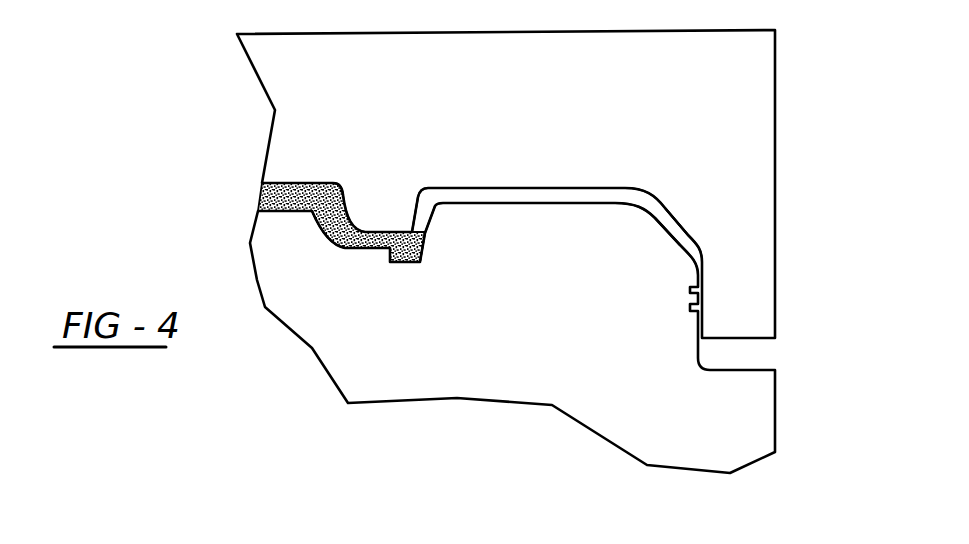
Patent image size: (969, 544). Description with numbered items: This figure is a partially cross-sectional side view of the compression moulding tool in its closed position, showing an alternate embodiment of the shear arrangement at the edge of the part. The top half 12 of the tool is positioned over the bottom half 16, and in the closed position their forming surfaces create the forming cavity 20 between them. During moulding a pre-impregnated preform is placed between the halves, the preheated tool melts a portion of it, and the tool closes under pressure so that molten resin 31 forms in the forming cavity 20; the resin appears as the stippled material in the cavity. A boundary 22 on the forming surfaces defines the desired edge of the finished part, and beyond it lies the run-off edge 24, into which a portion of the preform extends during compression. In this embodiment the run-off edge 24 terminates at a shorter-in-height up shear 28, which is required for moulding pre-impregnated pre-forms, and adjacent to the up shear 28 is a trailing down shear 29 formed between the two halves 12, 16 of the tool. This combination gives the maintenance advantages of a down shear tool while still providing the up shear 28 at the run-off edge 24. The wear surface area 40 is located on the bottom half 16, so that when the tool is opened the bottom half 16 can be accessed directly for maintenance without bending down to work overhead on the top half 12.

The top half 12 is at (535, 112).
The bottom half 16 is at (526, 363).
The forming cavity 20 is at (298, 185).
The boundary 22 is at (402, 223).
The run-off edge 24 is at (409, 263).
The up shear 28 is at (434, 221).
The trailing down shear 29 is at (670, 228).
The molten resin 31 is at (328, 243).
The wear surface area 40 is at (677, 235).